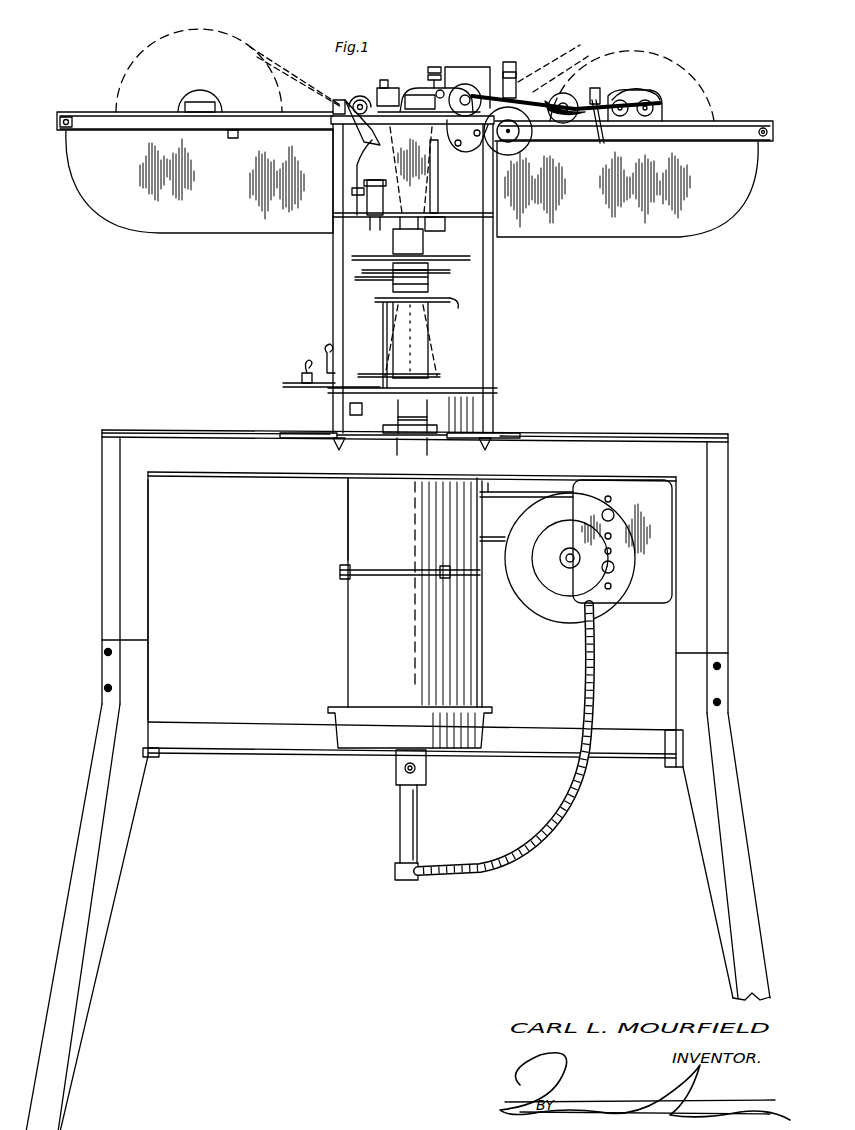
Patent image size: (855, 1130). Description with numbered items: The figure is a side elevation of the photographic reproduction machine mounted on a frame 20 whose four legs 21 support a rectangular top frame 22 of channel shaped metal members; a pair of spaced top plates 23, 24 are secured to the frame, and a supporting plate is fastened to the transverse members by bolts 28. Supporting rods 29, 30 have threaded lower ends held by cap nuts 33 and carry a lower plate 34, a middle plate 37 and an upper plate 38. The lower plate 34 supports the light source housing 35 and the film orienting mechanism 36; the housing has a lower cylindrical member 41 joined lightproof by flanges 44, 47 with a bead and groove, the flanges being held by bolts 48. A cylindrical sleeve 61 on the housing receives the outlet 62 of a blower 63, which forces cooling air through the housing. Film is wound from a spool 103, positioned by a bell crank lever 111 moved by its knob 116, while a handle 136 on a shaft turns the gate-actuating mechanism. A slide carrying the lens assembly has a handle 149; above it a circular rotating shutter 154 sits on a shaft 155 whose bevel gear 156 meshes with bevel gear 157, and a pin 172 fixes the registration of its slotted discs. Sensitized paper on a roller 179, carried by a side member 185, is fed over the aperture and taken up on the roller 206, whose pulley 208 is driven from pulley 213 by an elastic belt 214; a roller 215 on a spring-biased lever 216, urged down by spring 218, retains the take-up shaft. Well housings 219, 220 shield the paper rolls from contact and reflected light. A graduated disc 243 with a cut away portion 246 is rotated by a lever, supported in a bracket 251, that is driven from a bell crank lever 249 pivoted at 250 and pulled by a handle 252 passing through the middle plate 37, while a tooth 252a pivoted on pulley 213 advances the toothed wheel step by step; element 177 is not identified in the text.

The frame 20 is at (730, 625).
The legs 21 is at (97, 956).
The top frame 22 is at (205, 468).
The top plate 23 is at (208, 420).
The top plate 24 is at (602, 418).
The bolts 28 is at (310, 430).
The supporting rod 29 is at (337, 305).
The supporting rod 30 is at (485, 337).
The cap nuts 33 is at (337, 447).
The lower plate 34 is at (475, 368).
The light source housing 35 is at (346, 533).
The film orienting mechanism 36 is at (363, 368).
The middle plate 37 is at (462, 200).
The upper plate 38 is at (362, 100).
The cylindrical member 41 is at (353, 657).
The flange 44 is at (393, 553).
The flange 47 is at (365, 576).
The bolts 48 is at (345, 579).
The cylindrical sleeve 61 is at (467, 500).
The outlet 62 is at (511, 524).
The blower 63 is at (547, 617).
The spool 103 is at (395, 450).
The bell crank lever 111 is at (300, 382).
The knob 116 is at (307, 367).
The handle 136 is at (325, 342).
The handle 149 is at (455, 303).
The rotating shutter 154 is at (468, 265).
The shaft 155 is at (393, 250).
The bevel gear 156 is at (437, 122).
The bevel gear 157 is at (388, 88).
The pin 172 is at (437, 256).
The lever arm 177 is at (417, 90).
The roller 179 is at (190, 93).
The side member 185 is at (235, 133).
The take-up roller 206 is at (638, 82).
The pulley 208 is at (655, 100).
The pulley 213 is at (470, 70).
The belt 214 is at (558, 68).
The roller 215 is at (636, 84).
The lever 216 is at (611, 130).
The spring 218 is at (595, 98).
The well housing 219 is at (213, 223).
The well housing 220 is at (600, 230).
The graduated disc 243 is at (533, 145).
The cut away portion 246 is at (470, 149).
The bell crank lever 249 is at (355, 134).
The pivot 250 is at (347, 135).
The bracket 251 is at (455, 84).
The handle 252 is at (352, 237).
The tooth 252a is at (478, 82).